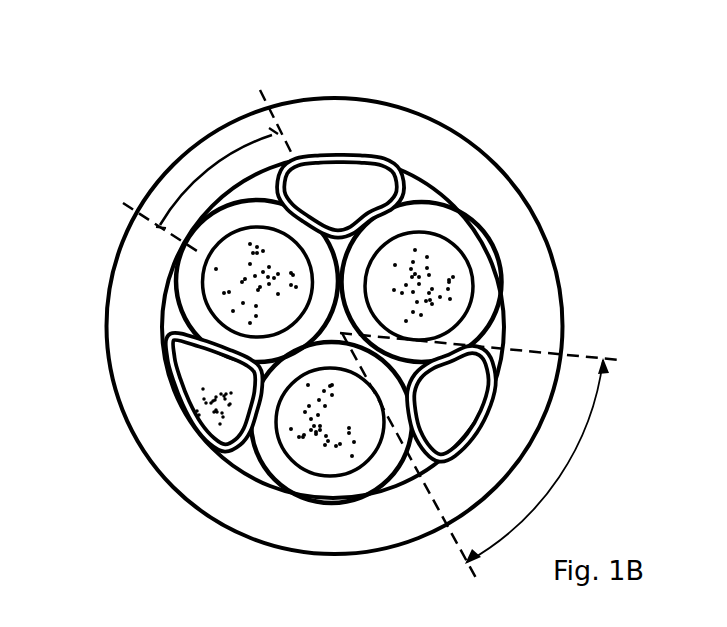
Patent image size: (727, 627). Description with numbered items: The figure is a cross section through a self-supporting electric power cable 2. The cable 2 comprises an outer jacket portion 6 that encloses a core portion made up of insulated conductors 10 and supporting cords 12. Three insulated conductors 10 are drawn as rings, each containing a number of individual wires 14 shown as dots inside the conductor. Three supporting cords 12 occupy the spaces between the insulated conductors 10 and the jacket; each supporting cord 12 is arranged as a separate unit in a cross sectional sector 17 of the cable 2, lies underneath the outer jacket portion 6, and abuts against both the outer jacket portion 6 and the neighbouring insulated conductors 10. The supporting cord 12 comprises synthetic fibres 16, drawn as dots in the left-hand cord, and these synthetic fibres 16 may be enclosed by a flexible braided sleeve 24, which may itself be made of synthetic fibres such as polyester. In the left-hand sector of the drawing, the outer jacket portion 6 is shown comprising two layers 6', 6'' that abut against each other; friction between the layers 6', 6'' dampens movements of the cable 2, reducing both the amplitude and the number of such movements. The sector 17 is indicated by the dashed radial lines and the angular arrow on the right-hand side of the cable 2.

The self-supporting electric power cable 2 is at (628, 243).
The outer jacket portion 6 is at (353, 303).
The first layer of the outer jacket portion 6' is at (185, 176).
The second layer of the outer jacket portion 6'' is at (207, 159).
The insulated conductor 10 is at (207, 288).
The supporting cord 12 is at (345, 185).
The individual wires 14 is at (328, 434).
The synthetic fibres 16 is at (208, 384).
The cross sectional sector 17 is at (594, 425).
The flexible braided sleeve 24 is at (182, 410).